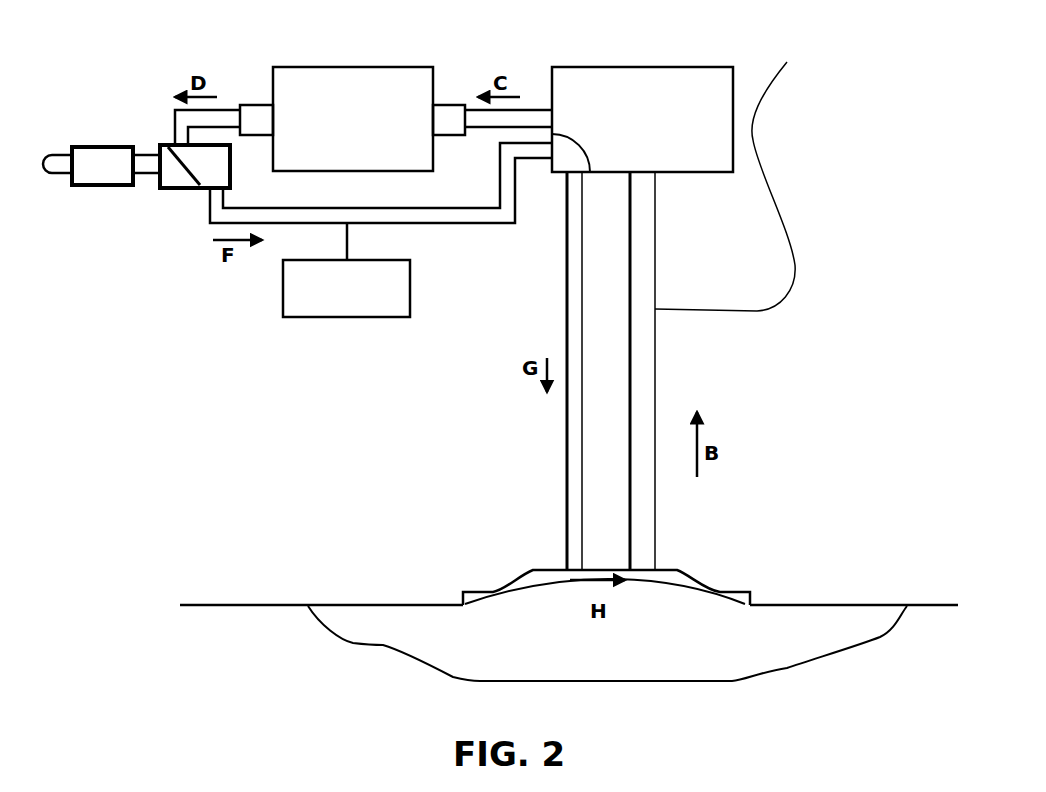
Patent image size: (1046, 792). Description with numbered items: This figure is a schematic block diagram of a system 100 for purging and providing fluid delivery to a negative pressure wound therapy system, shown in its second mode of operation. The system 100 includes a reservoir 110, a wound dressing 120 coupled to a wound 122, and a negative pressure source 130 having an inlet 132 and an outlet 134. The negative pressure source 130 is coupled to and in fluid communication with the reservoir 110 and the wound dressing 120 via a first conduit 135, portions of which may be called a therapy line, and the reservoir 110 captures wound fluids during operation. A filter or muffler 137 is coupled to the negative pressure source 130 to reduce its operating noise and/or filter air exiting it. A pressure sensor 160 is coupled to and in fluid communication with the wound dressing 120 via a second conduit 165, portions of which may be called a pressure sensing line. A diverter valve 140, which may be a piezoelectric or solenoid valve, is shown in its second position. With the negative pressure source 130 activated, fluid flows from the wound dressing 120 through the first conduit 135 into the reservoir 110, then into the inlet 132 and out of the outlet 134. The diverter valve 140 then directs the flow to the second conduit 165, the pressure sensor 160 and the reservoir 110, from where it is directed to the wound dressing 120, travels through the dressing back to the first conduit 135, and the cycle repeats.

The system 100 is at (800, 92).
The reservoir 110 is at (690, 172).
The wound dressing 120 is at (520, 582).
The wound 122 is at (352, 643).
The negative pressure source 130 is at (383, 67).
The inlet 132 is at (462, 105).
The outlet 134 is at (253, 105).
The first conduit 135 is at (537, 110).
The filter or muffler 137 is at (100, 147).
The diverter valve 140 is at (165, 190).
The pressure sensor 160 is at (372, 318).
The second conduit 165 is at (567, 335).